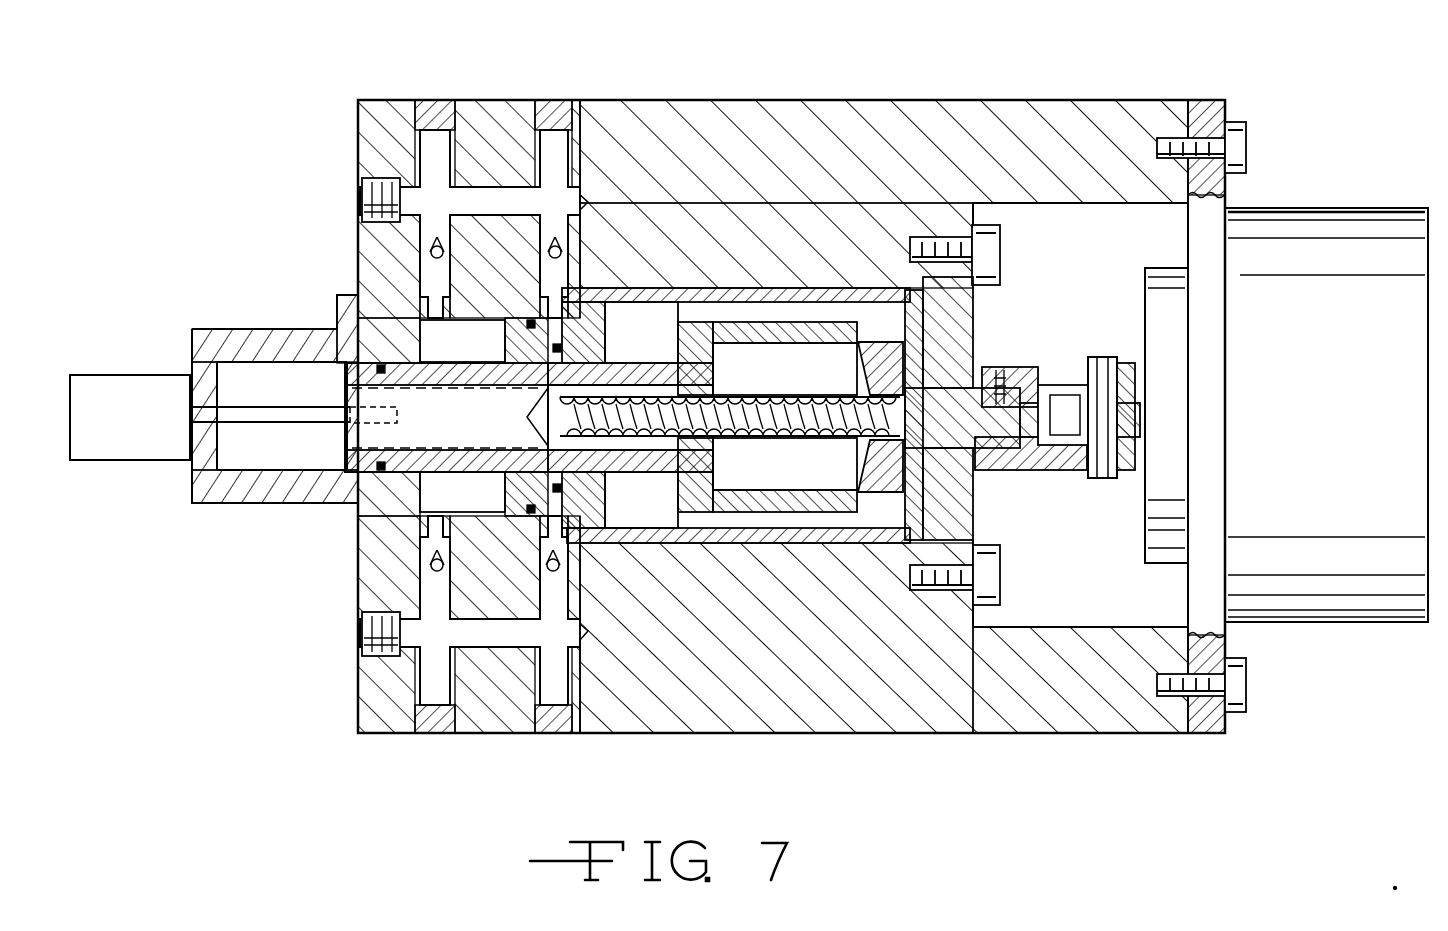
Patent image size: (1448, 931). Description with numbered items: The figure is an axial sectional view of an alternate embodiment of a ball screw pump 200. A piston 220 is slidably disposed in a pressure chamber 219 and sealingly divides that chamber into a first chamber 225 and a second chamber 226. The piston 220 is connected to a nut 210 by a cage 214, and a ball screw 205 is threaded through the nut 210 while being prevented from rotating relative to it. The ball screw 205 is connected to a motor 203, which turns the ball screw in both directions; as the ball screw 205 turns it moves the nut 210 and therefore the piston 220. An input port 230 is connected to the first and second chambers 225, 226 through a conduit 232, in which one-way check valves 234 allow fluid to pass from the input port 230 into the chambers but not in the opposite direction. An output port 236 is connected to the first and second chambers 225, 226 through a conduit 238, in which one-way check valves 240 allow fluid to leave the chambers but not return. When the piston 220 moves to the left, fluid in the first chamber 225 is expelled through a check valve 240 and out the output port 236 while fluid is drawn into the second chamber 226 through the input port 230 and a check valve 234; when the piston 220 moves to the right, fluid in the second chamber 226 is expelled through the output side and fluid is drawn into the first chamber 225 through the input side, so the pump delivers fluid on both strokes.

The ball screw pump 200 is at (657, 90).
The motor 203 is at (1293, 608).
The ball screw 205 is at (787, 397).
The nut 210 is at (778, 470).
The cage 214 is at (733, 325).
The pressure chamber 219 is at (418, 315).
The piston 220 is at (505, 500).
The first chamber 225 is at (478, 506).
The second chamber 226 is at (577, 484).
The input port 230 is at (361, 203).
The conduit 232 is at (440, 230).
The one-way check valves 234 is at (428, 249).
The output port 236 is at (360, 636).
The conduit 238 is at (430, 592).
The one-way check valves 240 is at (430, 556).